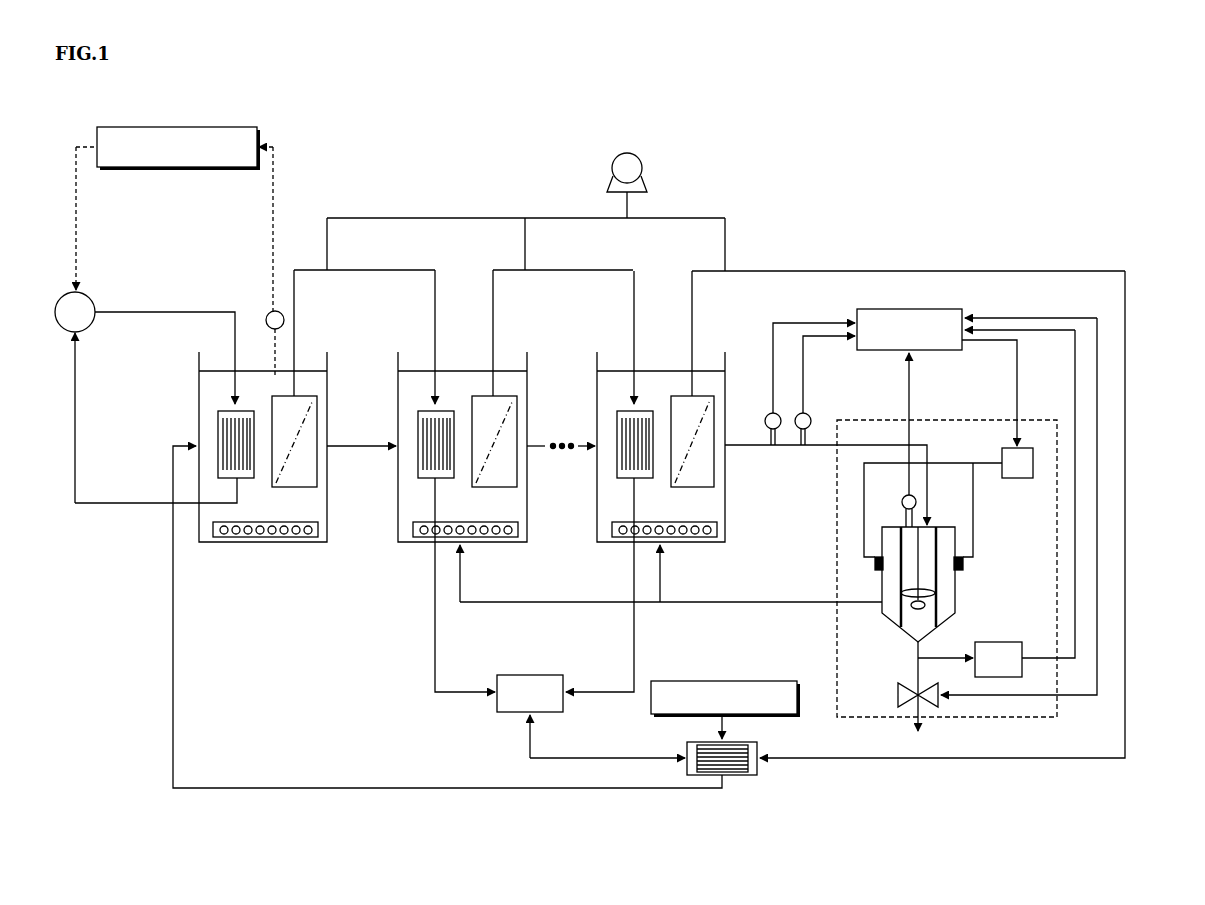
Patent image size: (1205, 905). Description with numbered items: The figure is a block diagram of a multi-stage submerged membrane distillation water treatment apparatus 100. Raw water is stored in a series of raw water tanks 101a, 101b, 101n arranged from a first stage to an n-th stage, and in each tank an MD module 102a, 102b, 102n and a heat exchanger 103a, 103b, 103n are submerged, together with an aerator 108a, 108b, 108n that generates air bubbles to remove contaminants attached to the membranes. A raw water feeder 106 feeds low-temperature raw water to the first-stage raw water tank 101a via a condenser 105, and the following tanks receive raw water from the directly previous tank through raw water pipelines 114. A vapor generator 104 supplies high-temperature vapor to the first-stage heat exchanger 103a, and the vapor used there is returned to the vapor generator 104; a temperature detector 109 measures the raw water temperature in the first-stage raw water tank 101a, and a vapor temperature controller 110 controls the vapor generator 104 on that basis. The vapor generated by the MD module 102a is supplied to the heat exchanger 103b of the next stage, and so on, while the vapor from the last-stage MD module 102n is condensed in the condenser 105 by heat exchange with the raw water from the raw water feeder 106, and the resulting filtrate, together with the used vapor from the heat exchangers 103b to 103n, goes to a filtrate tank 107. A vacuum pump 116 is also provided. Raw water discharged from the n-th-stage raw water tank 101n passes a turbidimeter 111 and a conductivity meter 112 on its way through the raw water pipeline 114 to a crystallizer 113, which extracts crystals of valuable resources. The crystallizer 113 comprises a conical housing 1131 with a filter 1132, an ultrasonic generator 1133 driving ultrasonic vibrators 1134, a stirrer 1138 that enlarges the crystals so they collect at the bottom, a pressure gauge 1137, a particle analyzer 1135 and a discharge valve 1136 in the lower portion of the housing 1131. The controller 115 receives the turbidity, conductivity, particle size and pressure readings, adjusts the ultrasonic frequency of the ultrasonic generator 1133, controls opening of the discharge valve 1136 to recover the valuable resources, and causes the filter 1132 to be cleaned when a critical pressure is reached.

The multi-stage submerged membrane distillation water treatment apparatus 100 is at (856, 150).
The first-stage raw water tank 101a is at (197, 375).
The second-stage raw water tank 101b is at (396, 375).
The n-th-stage raw water tank 101n is at (595, 375).
The first-stage MD module 102a is at (317, 479).
The second-stage MD module 102b is at (517, 479).
The n-th-stage MD module 102n is at (714, 479).
The first-stage heat exchanger 103a is at (216, 426).
The second-stage heat exchanger 103b is at (416, 426).
The n-th-stage heat exchanger 103n is at (615, 426).
The vapor generator 104 is at (88, 294).
The condenser 105 is at (739, 778).
The raw water feeder 106 is at (722, 680).
The filtrate tank 107 is at (531, 673).
The first-stage aerator 108a is at (295, 540).
The second-stage aerator 108b is at (495, 540).
The n-th-stage aerator 108n is at (695, 540).
The temperature detector 109 is at (268, 312).
The vapor temperature controller 110 is at (163, 126).
The turbidimeter 111 is at (768, 413).
The conductivity meter 112 is at (807, 413).
The crystallizer 113 is at (967, 418).
The raw water pipeline 114 is at (345, 450).
The controller 115 is at (906, 308).
The vacuum pump 116 is at (632, 152).
The housing 1131 is at (958, 578).
The filter 1132 is at (940, 594).
The ultrasonic generator 1133 is at (1015, 480).
The ultrasonic vibrator 1134 is at (872, 558).
The particle analyzer 1135 is at (1015, 642).
The discharge valve 1136 is at (897, 692).
The pressure gauge 1137 is at (904, 496).
The stirrer 1138 is at (900, 618).